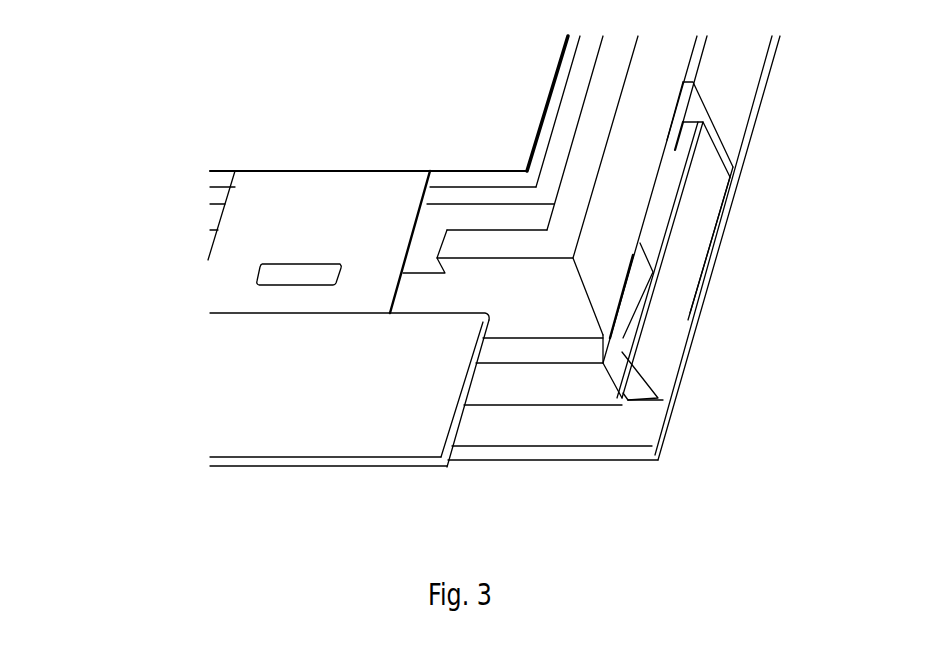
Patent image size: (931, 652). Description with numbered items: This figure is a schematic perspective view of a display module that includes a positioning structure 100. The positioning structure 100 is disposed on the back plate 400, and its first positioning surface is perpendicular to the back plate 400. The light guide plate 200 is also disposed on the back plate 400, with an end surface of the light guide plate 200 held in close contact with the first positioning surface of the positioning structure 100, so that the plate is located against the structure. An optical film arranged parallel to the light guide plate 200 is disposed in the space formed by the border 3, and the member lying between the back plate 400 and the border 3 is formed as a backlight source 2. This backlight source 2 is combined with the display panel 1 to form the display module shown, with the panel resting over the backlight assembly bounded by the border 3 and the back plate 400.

The display panel 1 is at (265, 145).
The backlight source 2 is at (677, 63).
The border 3 is at (642, 155).
The positioning structure 100 is at (672, 275).
The light guide plate 200 is at (525, 385).
The back plate 400 is at (628, 422).